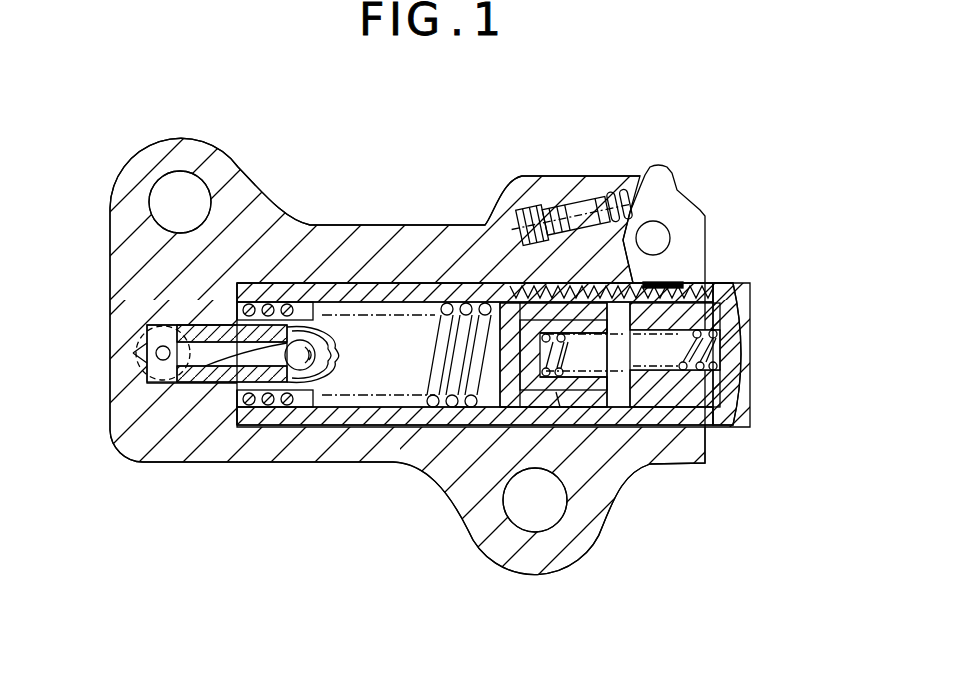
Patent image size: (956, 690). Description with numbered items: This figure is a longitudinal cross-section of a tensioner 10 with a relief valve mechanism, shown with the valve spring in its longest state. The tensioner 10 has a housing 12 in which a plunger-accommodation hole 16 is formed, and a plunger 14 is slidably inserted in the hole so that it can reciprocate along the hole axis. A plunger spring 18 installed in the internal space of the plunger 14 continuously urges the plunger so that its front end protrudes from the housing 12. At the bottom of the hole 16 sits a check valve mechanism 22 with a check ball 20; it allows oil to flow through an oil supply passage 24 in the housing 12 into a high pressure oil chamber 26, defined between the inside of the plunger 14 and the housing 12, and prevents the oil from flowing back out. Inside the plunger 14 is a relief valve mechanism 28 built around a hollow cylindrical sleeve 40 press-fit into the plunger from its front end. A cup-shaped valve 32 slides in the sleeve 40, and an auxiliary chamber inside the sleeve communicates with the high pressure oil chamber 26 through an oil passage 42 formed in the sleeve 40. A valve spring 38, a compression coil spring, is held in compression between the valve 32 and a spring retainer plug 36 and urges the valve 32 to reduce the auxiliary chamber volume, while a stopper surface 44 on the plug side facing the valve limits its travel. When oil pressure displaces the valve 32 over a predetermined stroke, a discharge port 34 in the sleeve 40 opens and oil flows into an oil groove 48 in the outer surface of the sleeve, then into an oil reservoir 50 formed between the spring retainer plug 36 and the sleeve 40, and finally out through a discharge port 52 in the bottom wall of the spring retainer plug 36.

The tensioner 10 is at (406, 156).
The housing 12 is at (244, 165).
The plunger 14 is at (366, 282).
The plunger-accommodation hole 16 is at (310, 300).
The plunger spring 18 is at (455, 300).
The check ball 20 is at (213, 388).
The check valve mechanism 22 is at (342, 372).
The oil supply passage 24 is at (138, 356).
The high pressure oil chamber 26 is at (395, 346).
The relief valve mechanism 28 is at (623, 392).
The cup-shaped valve 32 is at (576, 415).
The discharge port 34 is at (558, 395).
The spring retainer plug 36 is at (733, 388).
The valve spring 38 is at (740, 318).
The sleeve 40 is at (460, 415).
The oil passage 42 is at (500, 347).
The stopper surface 44 is at (660, 392).
The oil groove 48 is at (582, 410).
The oil reservoir 50 is at (670, 364).
The discharge port 52 is at (735, 353).